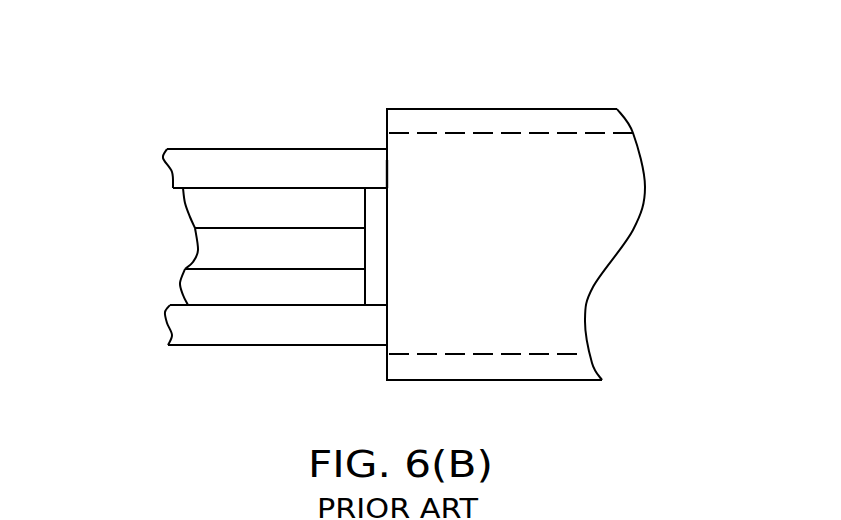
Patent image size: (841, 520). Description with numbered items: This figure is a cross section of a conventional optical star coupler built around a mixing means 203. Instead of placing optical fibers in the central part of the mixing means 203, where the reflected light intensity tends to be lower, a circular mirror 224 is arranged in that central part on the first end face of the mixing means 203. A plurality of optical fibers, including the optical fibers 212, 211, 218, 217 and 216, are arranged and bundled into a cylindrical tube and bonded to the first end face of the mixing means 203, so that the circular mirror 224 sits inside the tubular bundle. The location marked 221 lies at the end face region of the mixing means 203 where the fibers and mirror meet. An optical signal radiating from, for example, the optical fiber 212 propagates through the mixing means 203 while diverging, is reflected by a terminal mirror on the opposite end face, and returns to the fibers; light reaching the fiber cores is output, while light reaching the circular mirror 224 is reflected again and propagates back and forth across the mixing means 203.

The mixing means 203 is at (555, 108).
The end face of ferrule 221 is at (387, 160).
The circular mirror 224 is at (377, 198).
The optical fiber 212 is at (160, 163).
The optical fiber 211 is at (187, 212).
The optical fiber 218 is at (198, 248).
The optical fiber 217 is at (182, 285).
The optical fiber 216 is at (168, 329).